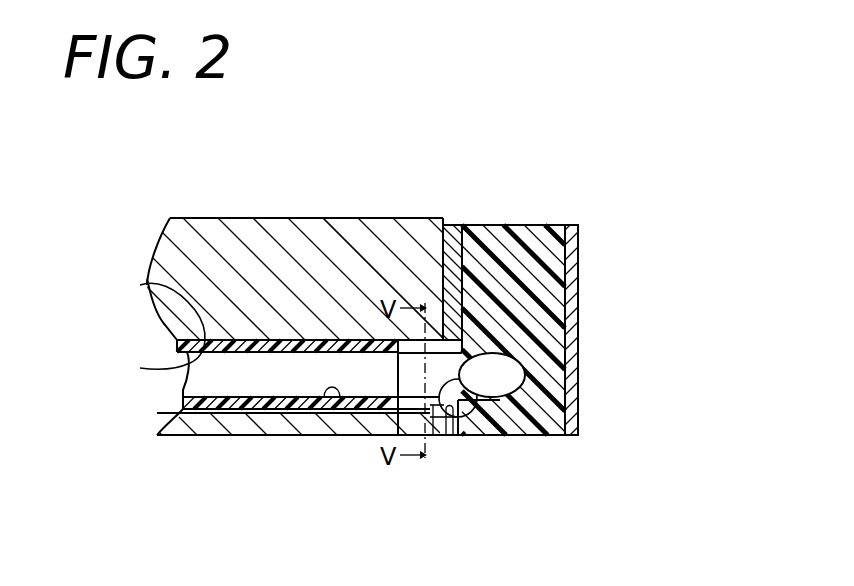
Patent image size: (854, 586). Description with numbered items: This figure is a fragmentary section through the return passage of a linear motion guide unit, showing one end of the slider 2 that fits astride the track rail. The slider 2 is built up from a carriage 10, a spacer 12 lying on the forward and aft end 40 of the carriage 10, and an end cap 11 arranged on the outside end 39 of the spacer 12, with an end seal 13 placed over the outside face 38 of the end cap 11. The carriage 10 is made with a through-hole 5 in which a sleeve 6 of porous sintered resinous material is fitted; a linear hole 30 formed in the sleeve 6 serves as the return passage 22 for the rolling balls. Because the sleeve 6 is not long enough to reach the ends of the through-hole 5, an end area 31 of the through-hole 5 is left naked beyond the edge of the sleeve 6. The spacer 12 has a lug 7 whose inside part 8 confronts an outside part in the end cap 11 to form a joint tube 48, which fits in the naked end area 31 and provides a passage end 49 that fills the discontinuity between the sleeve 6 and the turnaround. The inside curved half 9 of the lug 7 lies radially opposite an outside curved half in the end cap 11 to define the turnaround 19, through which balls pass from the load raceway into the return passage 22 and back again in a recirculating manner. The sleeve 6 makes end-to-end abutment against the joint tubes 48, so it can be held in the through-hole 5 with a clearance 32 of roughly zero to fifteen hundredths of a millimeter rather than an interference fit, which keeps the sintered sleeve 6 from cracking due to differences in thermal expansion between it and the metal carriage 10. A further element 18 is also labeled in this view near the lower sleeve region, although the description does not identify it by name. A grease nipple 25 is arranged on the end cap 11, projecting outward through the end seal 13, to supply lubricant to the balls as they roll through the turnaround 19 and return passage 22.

The slider 2 is at (565, 212).
The through-hole 5 is at (180, 347).
The sleeve 6 is at (313, 347).
The lug 7 is at (440, 405).
The inside part 8 is at (386, 390).
The inside curved half 9 is at (466, 412).
The carriage 10 is at (287, 263).
The end cap 11 is at (520, 278).
The spacer 12 is at (453, 257).
The end seal 13 is at (572, 305).
The bore 18 is at (358, 405).
The turnaround 19 is at (498, 390).
The return passage 22 is at (237, 380).
The grease nipple 25 is at (245, 218).
The linear hole 30 is at (333, 413).
The end area 31 is at (450, 410).
The clearance 32 is at (140, 287).
The outside face 38 is at (573, 260).
The outside end 39 is at (472, 272).
The forward and aft end 40 is at (412, 218).
The joint tube 48 is at (433, 440).
The passage end 49 is at (370, 300).